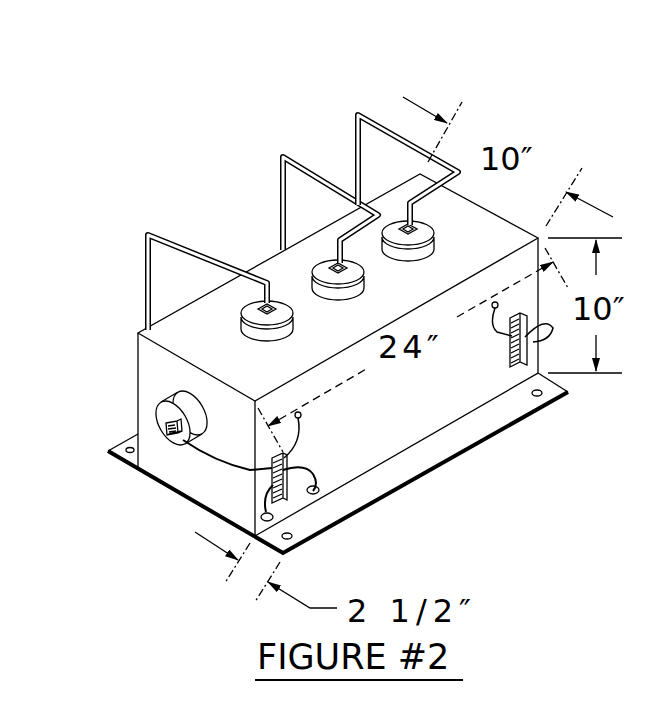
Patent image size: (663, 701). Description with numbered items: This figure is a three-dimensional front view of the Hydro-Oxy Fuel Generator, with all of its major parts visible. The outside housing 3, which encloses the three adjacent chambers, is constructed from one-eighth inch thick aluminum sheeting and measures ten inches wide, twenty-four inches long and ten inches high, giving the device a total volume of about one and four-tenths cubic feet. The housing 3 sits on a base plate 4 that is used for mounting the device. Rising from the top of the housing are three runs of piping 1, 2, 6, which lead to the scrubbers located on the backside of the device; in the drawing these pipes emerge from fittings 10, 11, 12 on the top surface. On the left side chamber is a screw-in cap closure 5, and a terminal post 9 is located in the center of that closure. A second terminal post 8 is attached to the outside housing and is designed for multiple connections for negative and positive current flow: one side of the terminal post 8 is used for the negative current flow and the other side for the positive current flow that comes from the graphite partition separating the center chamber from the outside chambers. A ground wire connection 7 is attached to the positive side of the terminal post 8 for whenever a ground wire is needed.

The piping 1 is at (280, 190).
The piping 2 is at (371, 112).
The outside housing 3 is at (495, 213).
The base plate 4 is at (399, 494).
The screw-in cap closure 5 is at (167, 403).
The piping 6 is at (137, 307).
The ground wire connection 7 is at (310, 437).
The terminal post 8 is at (255, 479).
The terminal post 9 is at (172, 441).
The capacitor 10 is at (237, 318).
The capacitor 11 is at (306, 265).
The capacitor 12 is at (396, 210).